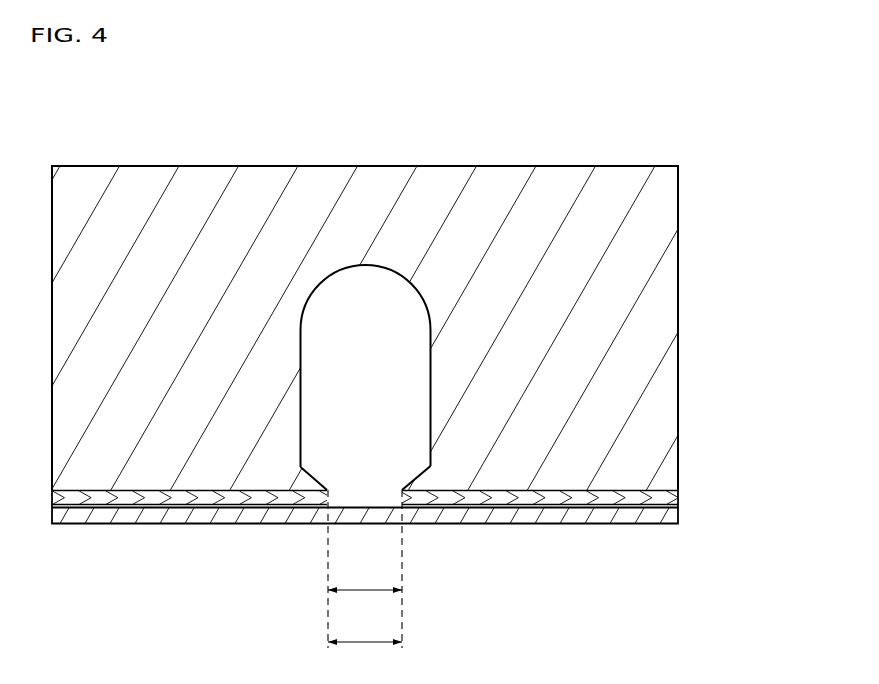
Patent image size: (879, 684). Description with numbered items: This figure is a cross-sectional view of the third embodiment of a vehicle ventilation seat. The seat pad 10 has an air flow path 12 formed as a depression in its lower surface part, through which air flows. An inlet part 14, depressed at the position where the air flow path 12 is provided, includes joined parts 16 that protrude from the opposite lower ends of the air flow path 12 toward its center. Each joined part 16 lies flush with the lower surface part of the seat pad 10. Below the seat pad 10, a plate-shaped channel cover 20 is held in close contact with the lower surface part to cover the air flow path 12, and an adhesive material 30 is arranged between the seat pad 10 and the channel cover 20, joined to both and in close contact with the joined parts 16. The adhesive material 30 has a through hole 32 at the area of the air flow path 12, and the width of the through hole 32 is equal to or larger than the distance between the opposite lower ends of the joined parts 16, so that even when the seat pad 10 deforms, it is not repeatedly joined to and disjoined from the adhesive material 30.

The seat pad 10 is at (662, 311).
The air flow path 12 is at (430, 433).
The inlet part 14 is at (437, 477).
The joined parts 16 is at (313, 468).
The adhesive material 30 is at (667, 498).
The channel cover 20 is at (667, 515).
The through hole 32 is at (333, 499).